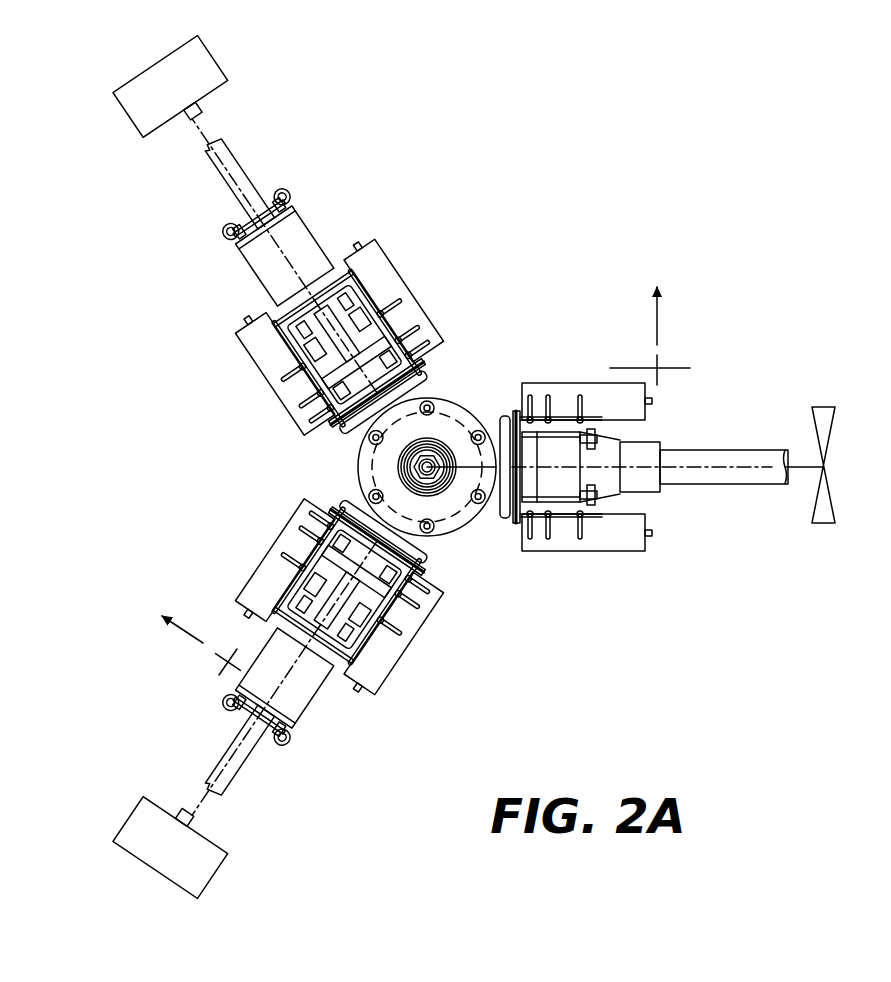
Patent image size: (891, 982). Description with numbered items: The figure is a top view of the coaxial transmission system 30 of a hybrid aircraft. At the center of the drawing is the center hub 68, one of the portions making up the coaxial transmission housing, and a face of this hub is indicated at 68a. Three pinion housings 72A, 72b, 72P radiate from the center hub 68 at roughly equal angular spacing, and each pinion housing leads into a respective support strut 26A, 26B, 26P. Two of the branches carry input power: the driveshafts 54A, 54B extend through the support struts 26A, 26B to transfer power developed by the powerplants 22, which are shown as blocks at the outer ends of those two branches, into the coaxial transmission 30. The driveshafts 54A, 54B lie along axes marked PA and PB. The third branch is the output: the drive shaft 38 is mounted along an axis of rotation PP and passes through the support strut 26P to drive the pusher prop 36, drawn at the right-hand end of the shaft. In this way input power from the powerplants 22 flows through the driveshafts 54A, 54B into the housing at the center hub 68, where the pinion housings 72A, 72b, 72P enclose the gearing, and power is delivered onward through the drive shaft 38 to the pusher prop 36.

The powerplant 22 is at (124, 86).
The support strut 26A is at (418, 622).
The support strut 26B is at (418, 312).
The support strut 26P is at (654, 488).
The coaxial transmission system 30 is at (544, 326).
The pusher prop 36 is at (829, 420).
The drive shaft 38 is at (731, 482).
The driveshaft 54A is at (235, 775).
The driveshaft 54B is at (229, 152).
The center hub 68 is at (455, 527).
The hub face 68a is at (486, 406).
The pinion housing 72A is at (357, 490).
The pinion housing 72b is at (426, 396).
The pinion housing 72P is at (505, 515).
The pressure axis A PA is at (300, 662).
The pressure axis B PB is at (283, 245).
The axis of rotation PP is at (717, 462).